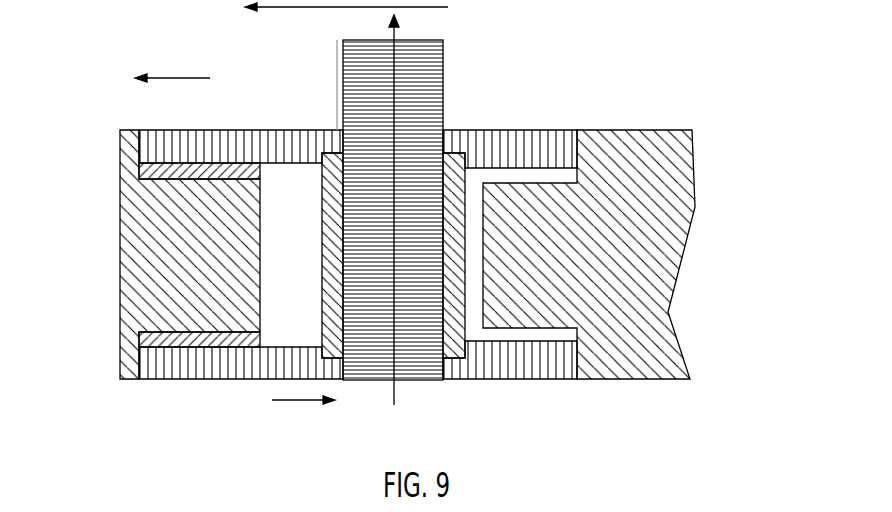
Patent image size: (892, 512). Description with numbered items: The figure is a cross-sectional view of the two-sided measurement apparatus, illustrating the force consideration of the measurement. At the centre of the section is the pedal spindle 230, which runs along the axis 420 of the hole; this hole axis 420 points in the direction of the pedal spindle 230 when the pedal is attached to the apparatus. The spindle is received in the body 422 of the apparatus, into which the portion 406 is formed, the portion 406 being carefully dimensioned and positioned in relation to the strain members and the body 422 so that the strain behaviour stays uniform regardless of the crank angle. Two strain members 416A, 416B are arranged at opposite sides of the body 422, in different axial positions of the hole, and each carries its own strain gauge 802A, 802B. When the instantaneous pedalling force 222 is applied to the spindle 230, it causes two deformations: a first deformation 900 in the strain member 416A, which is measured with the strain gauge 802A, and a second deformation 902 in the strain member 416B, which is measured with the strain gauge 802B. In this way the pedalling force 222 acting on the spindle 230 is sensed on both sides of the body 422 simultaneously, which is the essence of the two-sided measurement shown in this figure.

The instantaneous pedalling force 222 is at (300, 8).
The pedal spindle 230 is at (443, 83).
The portion 406 is at (322, 228).
The strain member 416A is at (262, 137).
The strain member 416B is at (233, 382).
The hole axis 420 is at (395, 30).
The body of the apparatus 422 is at (125, 240).
The strain gauge 802A is at (150, 170).
The strain gauge 802B is at (150, 338).
The first deformation 900 is at (178, 79).
The second deformation 902 is at (305, 400).